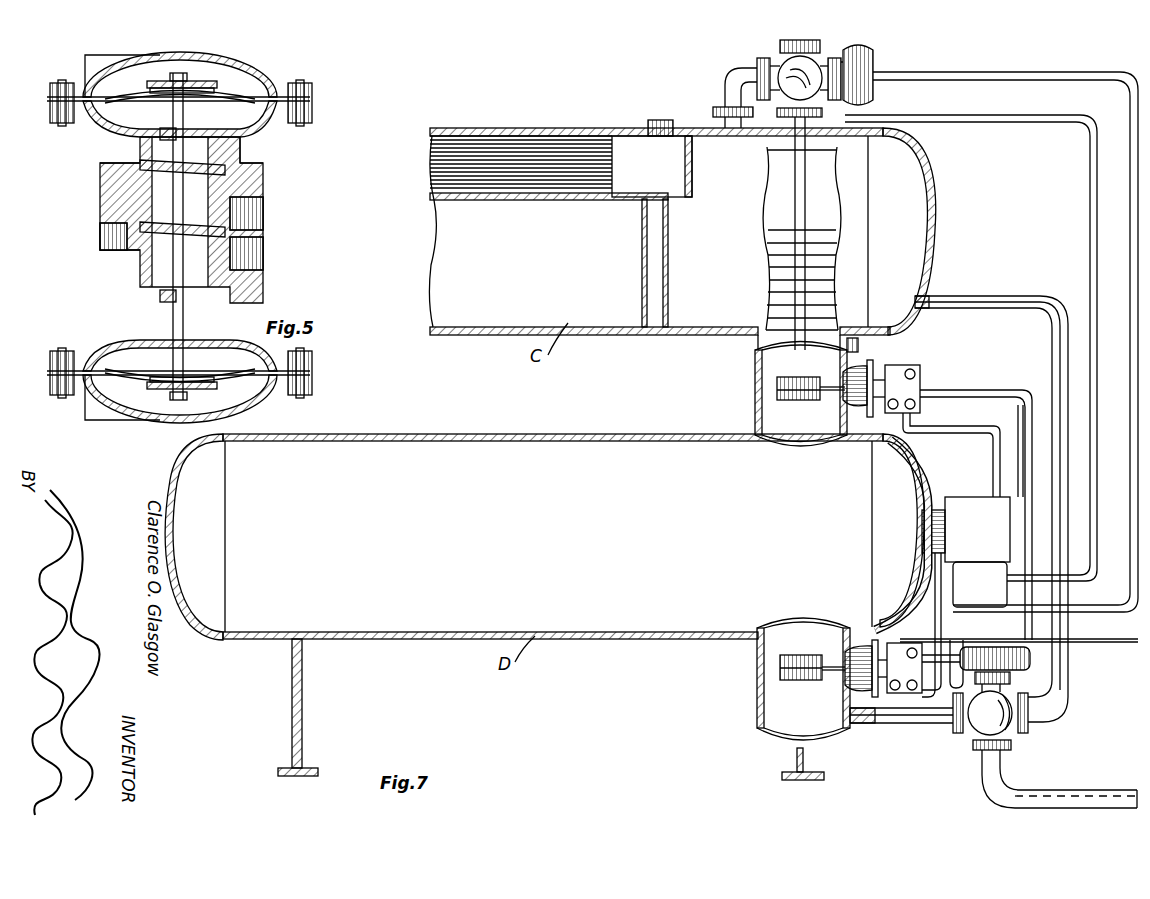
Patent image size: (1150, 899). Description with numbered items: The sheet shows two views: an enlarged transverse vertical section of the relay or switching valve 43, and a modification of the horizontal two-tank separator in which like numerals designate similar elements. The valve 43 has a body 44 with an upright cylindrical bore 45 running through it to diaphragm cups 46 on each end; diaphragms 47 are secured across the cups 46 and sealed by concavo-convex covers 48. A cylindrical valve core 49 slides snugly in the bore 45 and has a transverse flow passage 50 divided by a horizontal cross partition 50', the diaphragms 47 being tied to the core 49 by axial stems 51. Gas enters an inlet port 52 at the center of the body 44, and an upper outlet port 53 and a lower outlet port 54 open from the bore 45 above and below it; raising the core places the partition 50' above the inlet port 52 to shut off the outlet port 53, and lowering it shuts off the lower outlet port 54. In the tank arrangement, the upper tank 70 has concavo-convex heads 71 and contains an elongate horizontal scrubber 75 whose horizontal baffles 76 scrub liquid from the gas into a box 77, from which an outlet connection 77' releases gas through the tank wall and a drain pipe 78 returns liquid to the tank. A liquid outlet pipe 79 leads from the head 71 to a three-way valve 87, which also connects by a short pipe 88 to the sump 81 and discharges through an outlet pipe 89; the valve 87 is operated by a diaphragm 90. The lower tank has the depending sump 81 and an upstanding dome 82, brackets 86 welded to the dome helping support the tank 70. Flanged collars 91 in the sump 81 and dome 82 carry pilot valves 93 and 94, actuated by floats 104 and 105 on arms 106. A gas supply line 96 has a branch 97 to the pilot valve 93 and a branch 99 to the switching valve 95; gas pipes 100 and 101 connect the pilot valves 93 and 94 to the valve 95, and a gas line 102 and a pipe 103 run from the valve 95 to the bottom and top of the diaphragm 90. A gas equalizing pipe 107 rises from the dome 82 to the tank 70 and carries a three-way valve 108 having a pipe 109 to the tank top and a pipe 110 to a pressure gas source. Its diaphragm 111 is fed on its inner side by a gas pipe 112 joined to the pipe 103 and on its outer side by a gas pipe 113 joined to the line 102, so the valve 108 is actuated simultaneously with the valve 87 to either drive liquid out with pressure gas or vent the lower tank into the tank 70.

In FIG. 5, the relay or switching valve 43 is at (120, 190).
In FIG. 5, the body 44 is at (100, 205).
In FIG. 5, the cylindrical bore 45 is at (172, 300).
In FIG. 5, the diaphragm cups 46 is at (245, 120).
In FIG. 5, the diaphragms 47 is at (120, 96).
In FIG. 5, the concavo-convex covers 48 is at (250, 66).
In FIG. 5, the cylindrical valve core 49 is at (155, 172).
In FIG. 5, the transverse flow passage 50 is at (271, 162).
In FIG. 5, the horizontal cross partition 50' is at (226, 234).
In FIG. 5, the axial stems 51 is at (188, 105).
In FIG. 5, the inlet port 52 is at (100, 240).
In FIG. 5, the upper outlet port 53 is at (262, 212).
In FIG. 5, the lower outlet port 54 is at (262, 265).
In FIG. 7, the upper tank 70 is at (490, 128).
In FIG. 7, the concavo-convex heads 71 is at (932, 195).
In FIG. 7, the scrubber 75 is at (497, 201).
In FIG. 7, the horizontal baffles 76 is at (568, 182).
In FIG. 7, the box 77 is at (669, 166).
In FIG. 7, the outlet connection 77' is at (662, 113).
In FIG. 7, the drain pipe 78 is at (670, 240).
In FIG. 7, the liquid outlet pipe 79 is at (960, 298).
In FIG. 7, the sump 81 is at (755, 682).
In FIG. 7, the dome 82 is at (755, 375).
In FIG. 7, the brackets 86 is at (860, 346).
In FIG. 7, the three-way valve 87 is at (1012, 725).
In FIG. 7, the short pipe 88 is at (898, 724).
In FIG. 7, the outlet or discharge pipe 89 is at (982, 784).
In FIG. 7, the diaphragm 90 is at (1033, 658).
In FIG. 7, the flanged collar 91 is at (862, 378).
In FIG. 7, the pilot valve 93 is at (923, 382).
In FIG. 7, the pilot valve 94 is at (905, 695).
In FIG. 7, the relay or switching valve 95 is at (970, 495).
In FIG. 7, the gas supply line 96 is at (1125, 638).
In FIG. 7, the branch 97 is at (1002, 393).
In FIG. 7, the branch 99 is at (1020, 477).
In FIG. 7, the gas pipe 100 is at (930, 433).
In FIG. 7, the gas pipe 101 is at (923, 583).
In FIG. 7, the gas line 102 is at (958, 612).
In FIG. 7, the pipe 103 is at (1006, 570).
In FIG. 7, the float 104 is at (790, 403).
In FIG. 7, the float 105 is at (798, 653).
In FIG. 7, the arms 106 is at (836, 396).
In FIG. 7, the gas equalizing pipe 107 is at (793, 280).
In FIG. 7, the three-way valve 108 is at (778, 96).
In FIG. 7, the pipe 109 is at (740, 92).
In FIG. 7, the pipe 110 is at (782, 44).
In FIG. 7, the diaphragm 111 is at (876, 66).
In FIG. 7, the gas pipe 112 is at (1088, 185).
In FIG. 7, the gas pipe 113 is at (1072, 80).